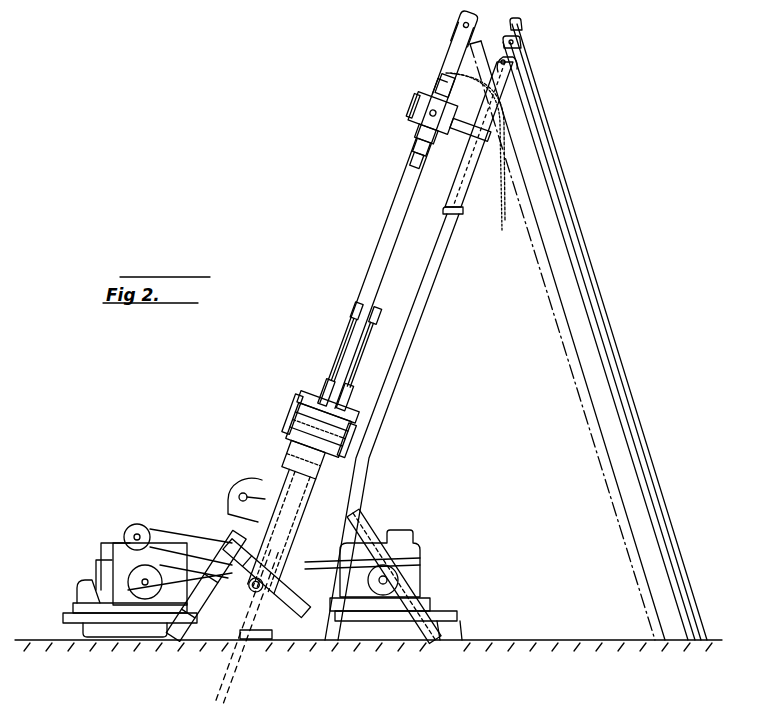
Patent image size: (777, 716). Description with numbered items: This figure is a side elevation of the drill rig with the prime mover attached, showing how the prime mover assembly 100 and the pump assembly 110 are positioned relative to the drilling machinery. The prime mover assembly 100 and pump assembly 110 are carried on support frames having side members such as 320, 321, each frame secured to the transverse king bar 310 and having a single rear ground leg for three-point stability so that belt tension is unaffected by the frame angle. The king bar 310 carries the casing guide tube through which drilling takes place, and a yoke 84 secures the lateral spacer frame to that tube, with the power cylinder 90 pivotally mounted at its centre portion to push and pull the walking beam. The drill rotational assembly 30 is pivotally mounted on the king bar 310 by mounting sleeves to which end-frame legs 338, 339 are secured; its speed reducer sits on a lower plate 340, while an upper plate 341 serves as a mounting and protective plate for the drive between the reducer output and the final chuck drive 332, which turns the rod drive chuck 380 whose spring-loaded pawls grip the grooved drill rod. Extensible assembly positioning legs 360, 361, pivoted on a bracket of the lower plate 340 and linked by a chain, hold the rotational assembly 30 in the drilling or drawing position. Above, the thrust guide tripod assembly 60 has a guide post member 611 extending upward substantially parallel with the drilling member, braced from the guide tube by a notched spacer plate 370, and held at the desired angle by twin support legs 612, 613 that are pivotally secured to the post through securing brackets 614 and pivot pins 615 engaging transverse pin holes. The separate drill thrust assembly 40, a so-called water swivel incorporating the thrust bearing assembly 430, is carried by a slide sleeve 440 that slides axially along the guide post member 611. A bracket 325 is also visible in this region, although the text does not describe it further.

The drill rotational assembly 30 is at (283, 517).
The drill thrust assembly 40 is at (415, 140).
The thrust guide tripod assembly 60 is at (605, 326).
The yoke 84 is at (237, 647).
The power cylinder 90 is at (337, 332).
The prime mover assembly 100 is at (403, 598).
The pump assembly 110 is at (123, 564).
The transverse king bar 310 is at (237, 604).
The side member 320 is at (368, 621).
The side member 321 is at (68, 617).
The clamp bracket 325 is at (224, 483).
The final chuck drive 332 is at (340, 460).
The end-frame leg 338 is at (296, 417).
The end-frame leg 339 is at (352, 435).
The lower plate 340 is at (300, 440).
The upper plate 341 is at (313, 412).
The assembly positioning leg 360 is at (184, 642).
The assembly positioning leg 361 is at (438, 643).
The notched spacer plate 370 is at (283, 614).
The rod drive chuck 380 is at (334, 482).
The water swivel thrust bearing assembly 430 is at (404, 128).
The slide sleeve 440 is at (463, 208).
The guide post member 611 is at (421, 348).
The support leg 612 is at (546, 176).
The support leg 613 is at (549, 146).
The securing bracket 614 is at (515, 49).
The pivot pin 615 is at (519, 34).